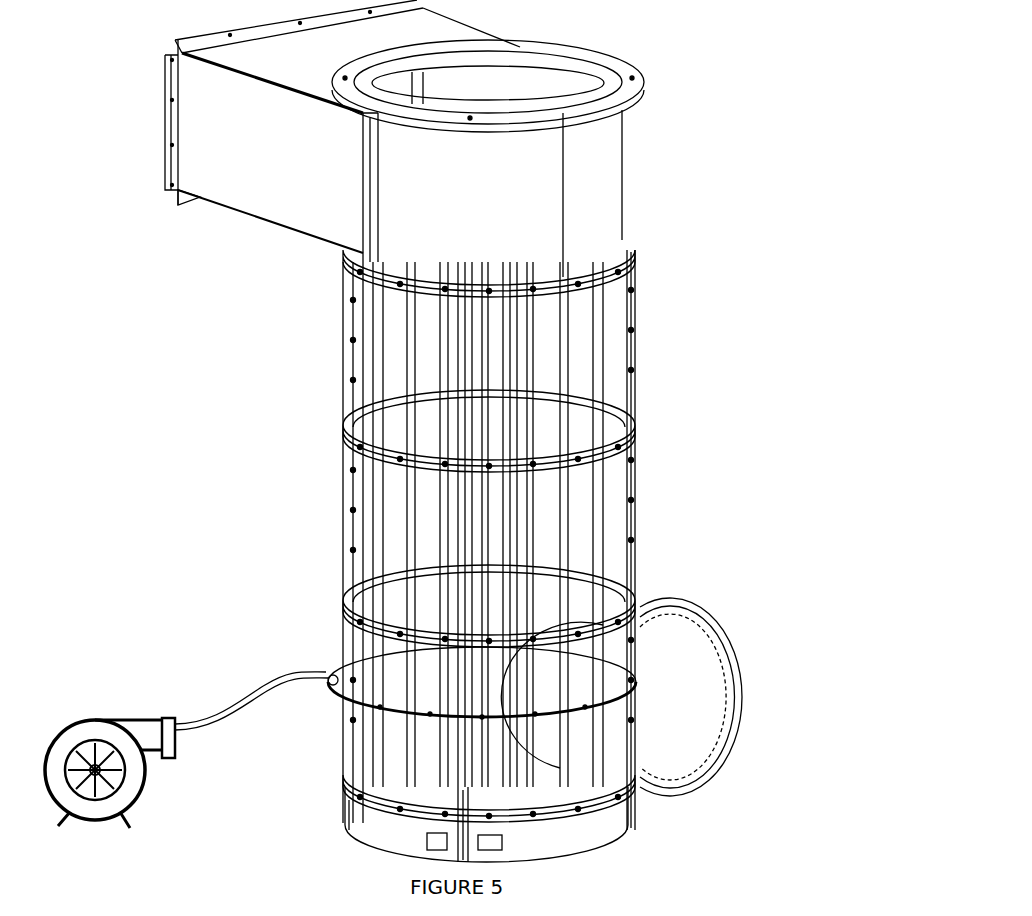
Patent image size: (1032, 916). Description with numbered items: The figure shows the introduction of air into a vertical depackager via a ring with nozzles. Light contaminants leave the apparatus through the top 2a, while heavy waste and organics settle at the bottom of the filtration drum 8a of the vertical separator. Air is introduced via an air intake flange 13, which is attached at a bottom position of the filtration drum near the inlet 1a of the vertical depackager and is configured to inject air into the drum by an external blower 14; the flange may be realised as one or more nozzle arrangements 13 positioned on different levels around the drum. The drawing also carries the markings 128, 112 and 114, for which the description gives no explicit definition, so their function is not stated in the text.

The outlet flange 128 is at (467, 18).
The top 2a is at (340, 123).
The filtration drum 8a is at (373, 497).
The vertical bars 112 is at (593, 540).
The inlet 1a is at (588, 648).
The side inlet port 114 is at (723, 720).
The air intake flange 13 is at (352, 728).
The external blower 14 is at (127, 770).